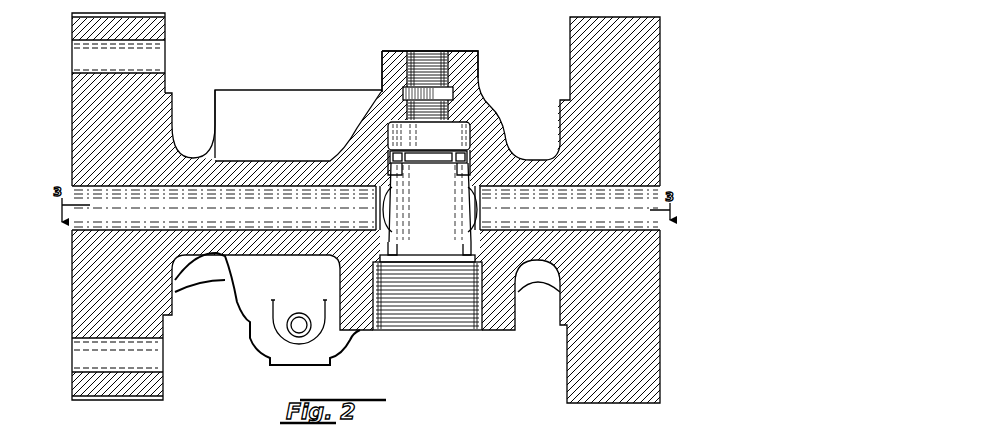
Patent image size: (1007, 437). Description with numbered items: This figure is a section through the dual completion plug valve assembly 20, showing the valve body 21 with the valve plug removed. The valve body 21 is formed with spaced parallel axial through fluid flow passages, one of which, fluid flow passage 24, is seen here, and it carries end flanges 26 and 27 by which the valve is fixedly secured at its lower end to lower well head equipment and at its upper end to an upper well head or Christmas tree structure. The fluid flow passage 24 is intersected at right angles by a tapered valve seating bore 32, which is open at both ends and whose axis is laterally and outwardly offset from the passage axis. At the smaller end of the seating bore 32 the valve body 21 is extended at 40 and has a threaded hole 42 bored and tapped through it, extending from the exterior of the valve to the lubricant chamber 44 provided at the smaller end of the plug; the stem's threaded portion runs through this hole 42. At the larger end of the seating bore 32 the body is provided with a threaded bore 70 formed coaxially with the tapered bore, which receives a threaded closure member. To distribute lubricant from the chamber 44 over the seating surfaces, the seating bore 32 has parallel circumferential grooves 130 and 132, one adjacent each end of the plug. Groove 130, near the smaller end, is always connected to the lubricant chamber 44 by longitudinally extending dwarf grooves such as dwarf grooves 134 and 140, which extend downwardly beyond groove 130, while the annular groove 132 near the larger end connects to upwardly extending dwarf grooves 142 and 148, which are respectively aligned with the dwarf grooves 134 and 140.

The dual completion plug valve assembly 20 is at (321, 50).
The valve body 21 is at (275, 166).
The fluid flow passage 24 is at (657, 231).
The end flange 26 is at (662, 70).
The end flange 27 is at (72, 22).
The tapered valve seating bore 32 is at (455, 210).
The extension of valve body 40 is at (477, 58).
The threaded hole 42 is at (441, 60).
The lubricant chamber 44 is at (469, 137).
The threaded bore 70 is at (381, 332).
The circumferential groove 130 is at (392, 163).
The annular groove 132 is at (381, 260).
The dwarf groove 134 is at (388, 172).
The dwarf groove 140 is at (470, 167).
The dwarf groove 142 is at (387, 248).
The dwarf groove 148 is at (473, 252).